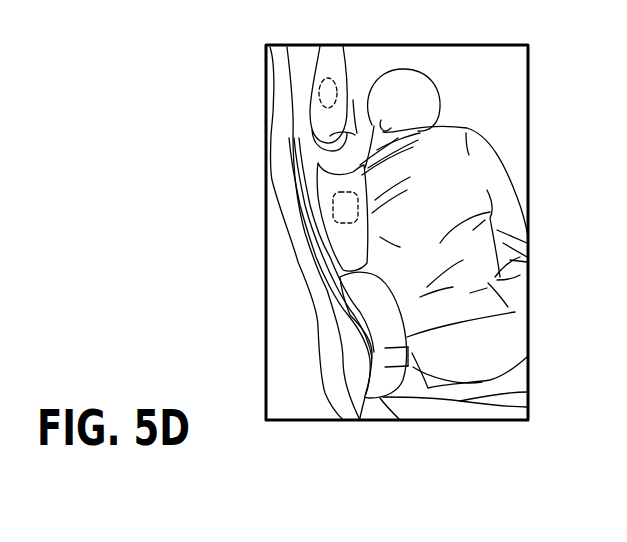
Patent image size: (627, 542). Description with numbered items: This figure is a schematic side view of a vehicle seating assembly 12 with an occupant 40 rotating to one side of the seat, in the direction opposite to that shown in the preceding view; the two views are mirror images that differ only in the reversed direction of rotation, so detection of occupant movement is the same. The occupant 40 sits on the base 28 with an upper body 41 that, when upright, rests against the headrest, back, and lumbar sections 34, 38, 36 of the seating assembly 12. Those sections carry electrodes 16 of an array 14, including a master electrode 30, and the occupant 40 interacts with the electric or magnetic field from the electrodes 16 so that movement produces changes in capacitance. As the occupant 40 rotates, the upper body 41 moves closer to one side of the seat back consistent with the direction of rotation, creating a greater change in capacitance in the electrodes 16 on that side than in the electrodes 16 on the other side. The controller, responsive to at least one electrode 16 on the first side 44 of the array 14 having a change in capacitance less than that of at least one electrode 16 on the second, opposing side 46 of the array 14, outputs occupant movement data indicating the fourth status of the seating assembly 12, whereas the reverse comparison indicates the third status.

The vehicle seating assembly 12 is at (250, 92).
The array 14 is at (343, 62).
The electrode 16 is at (337, 207).
The base 28 is at (505, 388).
The master electrode 30 is at (325, 95).
The headrest section 34 is at (307, 118).
The lumbar section 36 is at (383, 309).
The back section 38 is at (307, 178).
The occupant 40 is at (452, 104).
The upper body 41 is at (437, 182).
The side 44 is at (353, 100).
The opposing side 46 is at (383, 348).